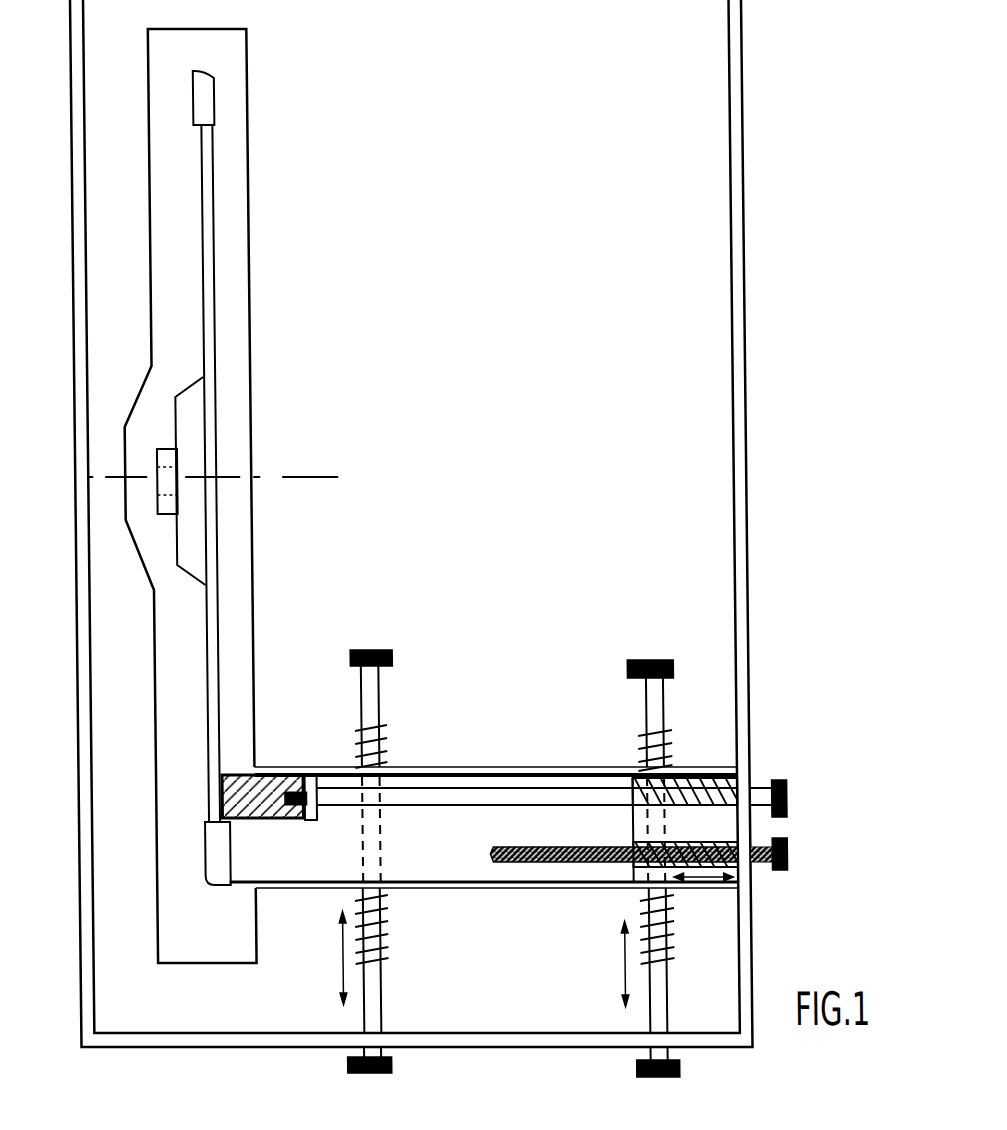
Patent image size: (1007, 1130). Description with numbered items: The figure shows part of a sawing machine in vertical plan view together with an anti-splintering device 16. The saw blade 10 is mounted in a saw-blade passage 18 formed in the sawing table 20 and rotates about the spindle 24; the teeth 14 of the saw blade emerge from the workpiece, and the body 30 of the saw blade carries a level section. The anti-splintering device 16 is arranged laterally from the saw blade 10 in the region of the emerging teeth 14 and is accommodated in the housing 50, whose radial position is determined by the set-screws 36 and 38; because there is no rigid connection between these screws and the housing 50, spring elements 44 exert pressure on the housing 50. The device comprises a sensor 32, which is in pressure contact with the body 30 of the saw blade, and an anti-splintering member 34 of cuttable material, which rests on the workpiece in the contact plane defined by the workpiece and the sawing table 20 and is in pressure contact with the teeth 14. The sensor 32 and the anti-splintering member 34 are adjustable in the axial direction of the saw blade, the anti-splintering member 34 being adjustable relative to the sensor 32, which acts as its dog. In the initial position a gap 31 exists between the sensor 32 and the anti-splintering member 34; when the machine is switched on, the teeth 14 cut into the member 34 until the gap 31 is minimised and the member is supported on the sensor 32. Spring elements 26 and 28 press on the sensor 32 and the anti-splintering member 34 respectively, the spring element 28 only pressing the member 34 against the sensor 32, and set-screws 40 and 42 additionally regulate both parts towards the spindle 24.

The saw blade 10 is at (220, 174).
The teeth 14 is at (200, 863).
The anti-splintering device 16 is at (527, 643).
The saw-blade passage 18 is at (246, 62).
The sawing table 20 is at (740, 80).
The spindle 24 is at (308, 477).
The spring element 26 is at (681, 780).
The spring element 28 is at (663, 868).
The body of the saw blade 30 is at (202, 303).
The gap 31 is at (305, 770).
The sensor 32 is at (262, 770).
The anti-splintering member 34 is at (449, 845).
The set-screw 36 is at (366, 650).
The set-screw 38 is at (648, 660).
The set-screw 40 is at (778, 800).
The set-screw 42 is at (778, 853).
The spring elements 44 is at (375, 747).
The housing 50 is at (489, 768).